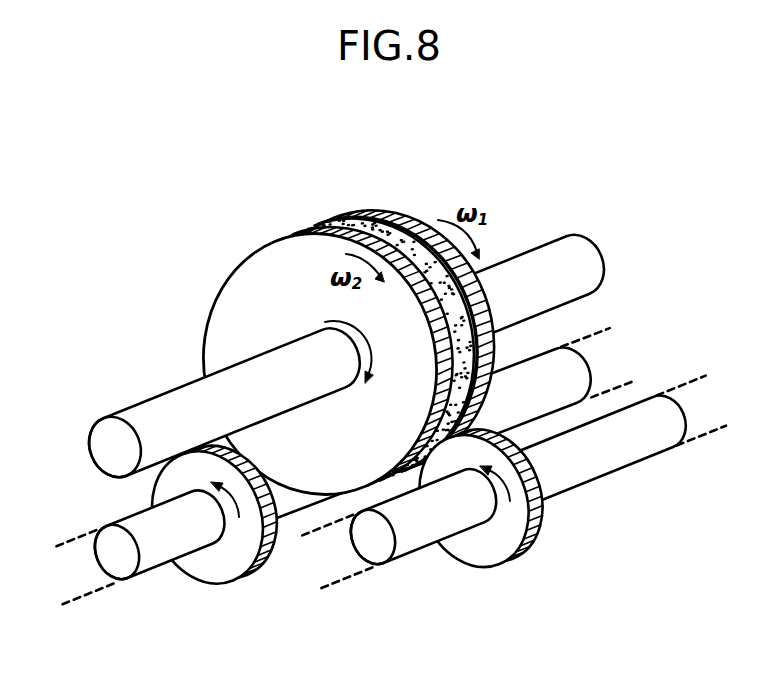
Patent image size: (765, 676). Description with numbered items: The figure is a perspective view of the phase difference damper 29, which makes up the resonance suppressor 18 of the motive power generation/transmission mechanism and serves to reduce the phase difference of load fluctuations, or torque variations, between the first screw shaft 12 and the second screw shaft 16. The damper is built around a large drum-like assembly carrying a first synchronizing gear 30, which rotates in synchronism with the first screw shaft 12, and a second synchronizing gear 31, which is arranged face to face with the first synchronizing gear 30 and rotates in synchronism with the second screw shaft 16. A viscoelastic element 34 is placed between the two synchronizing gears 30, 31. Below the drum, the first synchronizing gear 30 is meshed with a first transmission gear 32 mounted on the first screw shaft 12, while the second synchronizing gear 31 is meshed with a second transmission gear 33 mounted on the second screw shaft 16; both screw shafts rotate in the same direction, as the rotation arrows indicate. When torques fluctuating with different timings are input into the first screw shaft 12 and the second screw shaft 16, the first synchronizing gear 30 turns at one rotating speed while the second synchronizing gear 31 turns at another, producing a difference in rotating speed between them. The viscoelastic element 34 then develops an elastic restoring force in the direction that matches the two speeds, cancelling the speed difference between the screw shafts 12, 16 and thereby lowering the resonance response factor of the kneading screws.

The phase difference damper 29 is at (348, 333).
The resonance suppressor 18 is at (348, 333).
The first synchronizing gear 30 is at (411, 221).
The second synchronizing gear 31 is at (333, 247).
The viscoelastic element 34 is at (478, 271).
The second transmission gear 33 is at (228, 560).
The first transmission gear 32 is at (482, 553).
The second screw shaft 16 is at (166, 544).
The first screw shaft 12 is at (410, 538).